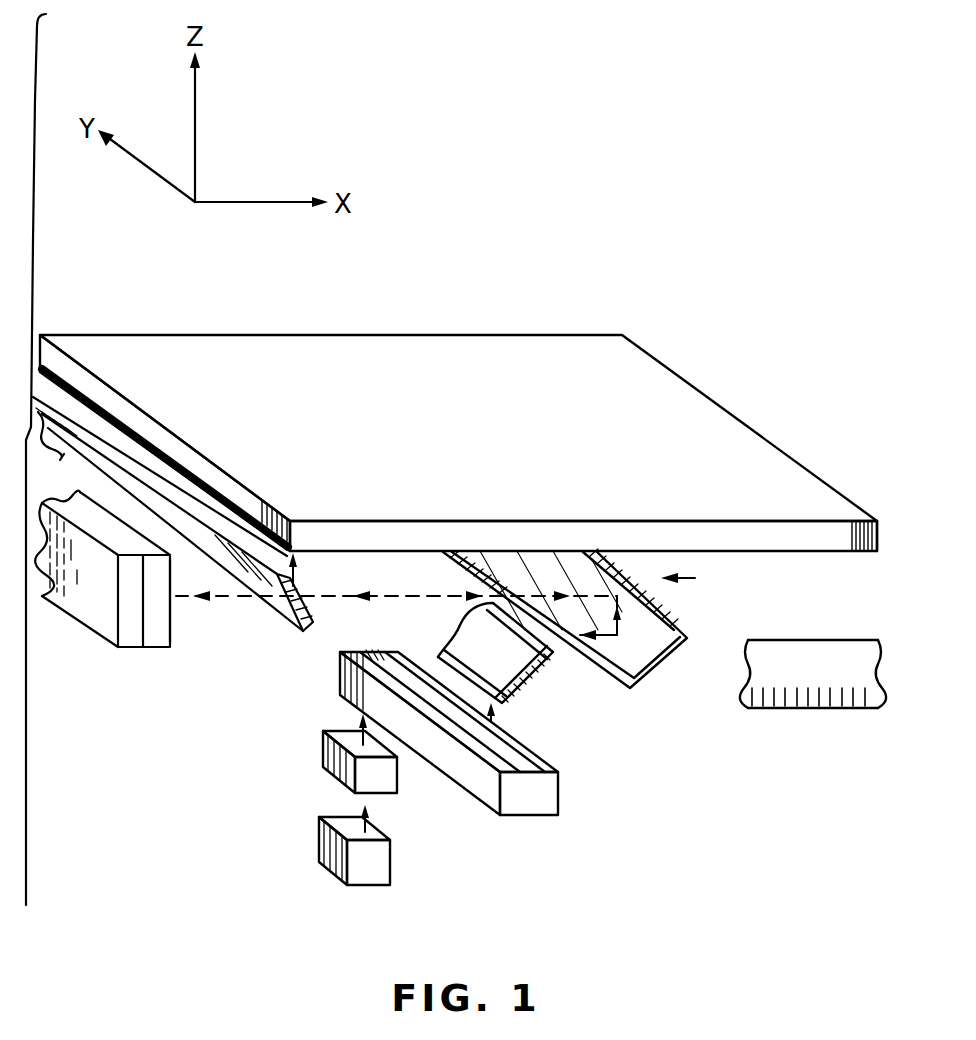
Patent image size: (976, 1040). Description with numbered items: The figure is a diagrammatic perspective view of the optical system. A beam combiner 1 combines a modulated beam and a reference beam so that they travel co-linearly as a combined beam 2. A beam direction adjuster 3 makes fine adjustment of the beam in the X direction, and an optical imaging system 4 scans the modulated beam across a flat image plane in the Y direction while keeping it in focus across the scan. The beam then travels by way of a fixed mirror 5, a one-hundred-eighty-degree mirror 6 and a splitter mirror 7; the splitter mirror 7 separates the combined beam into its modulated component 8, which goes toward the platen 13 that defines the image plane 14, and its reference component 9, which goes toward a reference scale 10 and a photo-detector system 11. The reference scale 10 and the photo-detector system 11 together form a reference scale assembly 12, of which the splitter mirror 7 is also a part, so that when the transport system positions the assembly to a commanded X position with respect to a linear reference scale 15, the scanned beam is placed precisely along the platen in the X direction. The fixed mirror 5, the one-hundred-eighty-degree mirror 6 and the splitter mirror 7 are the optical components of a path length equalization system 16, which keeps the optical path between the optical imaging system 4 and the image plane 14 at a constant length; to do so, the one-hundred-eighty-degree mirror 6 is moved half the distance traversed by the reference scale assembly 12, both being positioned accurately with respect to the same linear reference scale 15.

The beam combiner 1 is at (321, 847).
The combined beam 2 is at (382, 594).
The beam direction adjuster 3 is at (323, 746).
The optical imaging system 4 is at (559, 777).
The fixed mirror 5 is at (524, 676).
The 180° mirror 6 is at (688, 638).
The splitter mirror 7 is at (312, 624).
The modulated component 8 is at (298, 560).
The reference component 9 is at (222, 598).
The reference scale 10 is at (163, 648).
The photo-detector system 11 is at (137, 648).
The reference scale assembly 12 is at (121, 597).
The platen 13 is at (880, 522).
The image plane 14 is at (428, 443).
The linear reference scale 15 is at (814, 640).
The path length equalization system 16 is at (695, 578).